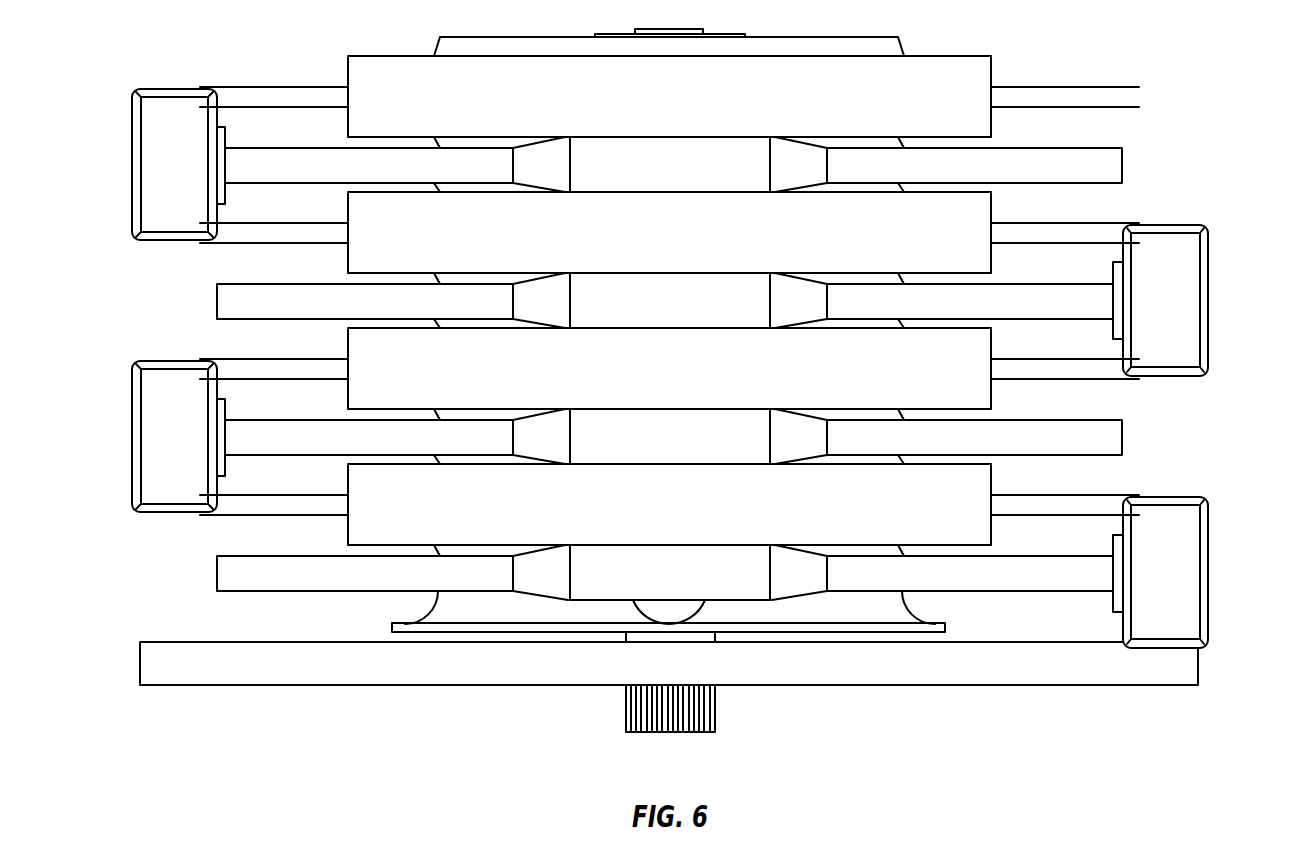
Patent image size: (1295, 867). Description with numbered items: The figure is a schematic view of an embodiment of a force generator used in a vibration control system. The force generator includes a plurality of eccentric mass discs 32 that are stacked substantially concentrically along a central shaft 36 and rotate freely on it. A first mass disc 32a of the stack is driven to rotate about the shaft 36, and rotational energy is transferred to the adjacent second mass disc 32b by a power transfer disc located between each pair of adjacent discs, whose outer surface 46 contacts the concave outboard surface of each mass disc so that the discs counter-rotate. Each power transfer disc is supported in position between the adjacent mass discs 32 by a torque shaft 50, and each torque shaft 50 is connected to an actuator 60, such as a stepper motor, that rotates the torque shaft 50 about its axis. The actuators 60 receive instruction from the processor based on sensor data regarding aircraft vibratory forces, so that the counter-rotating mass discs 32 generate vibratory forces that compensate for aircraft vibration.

The eccentric mass discs 32 is at (655, 108).
The first mass disc 32a is at (478, 605).
The second mass disc 32b is at (648, 518).
The central shaft 36 is at (702, 717).
The outer surface 46 is at (703, 612).
The torque shaft 50 is at (327, 167).
The actuator 60 is at (150, 166).